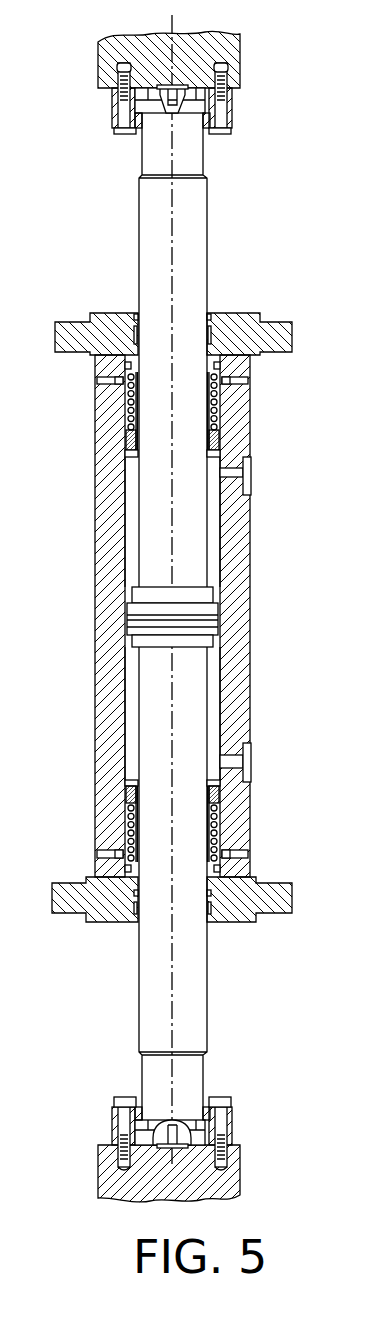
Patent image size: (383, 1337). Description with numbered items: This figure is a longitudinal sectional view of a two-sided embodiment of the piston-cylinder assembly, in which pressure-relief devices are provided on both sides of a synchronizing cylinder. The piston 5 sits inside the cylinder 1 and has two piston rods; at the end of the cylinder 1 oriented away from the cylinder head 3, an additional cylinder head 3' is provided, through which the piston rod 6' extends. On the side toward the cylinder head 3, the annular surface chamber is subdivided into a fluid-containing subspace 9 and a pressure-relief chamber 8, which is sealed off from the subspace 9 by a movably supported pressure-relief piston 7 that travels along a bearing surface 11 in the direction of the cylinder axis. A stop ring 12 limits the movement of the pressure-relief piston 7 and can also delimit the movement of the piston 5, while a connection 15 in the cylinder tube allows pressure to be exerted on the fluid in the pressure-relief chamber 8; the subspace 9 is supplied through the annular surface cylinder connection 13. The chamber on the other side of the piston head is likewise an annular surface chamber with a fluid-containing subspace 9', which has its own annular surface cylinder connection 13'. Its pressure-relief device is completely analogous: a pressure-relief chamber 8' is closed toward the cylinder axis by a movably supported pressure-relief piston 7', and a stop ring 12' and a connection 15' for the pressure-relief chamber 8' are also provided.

The cylinder 1 is at (102, 445).
The cylinder head 3 is at (199, 897).
The additional cylinder head 3' is at (211, 334).
The piston 5 is at (208, 608).
The piston rod 6' is at (230, 616).
The pressure-relief piston 7 is at (235, 781).
The pressure-relief piston 7' is at (232, 421).
The pressure-relief chamber 8 is at (231, 828).
The pressure-relief chamber 8' is at (126, 407).
The subspace 9 is at (229, 713).
The subspace 9' is at (226, 522).
The bearing surface 11 is at (132, 837).
The stop ring 12 is at (117, 770).
The stop ring 12' is at (240, 440).
The annular surface cylinder connection 13 is at (281, 753).
The annular surface cylinder connection 13' is at (283, 476).
The connection 15 is at (222, 848).
The connection 15' is at (226, 377).